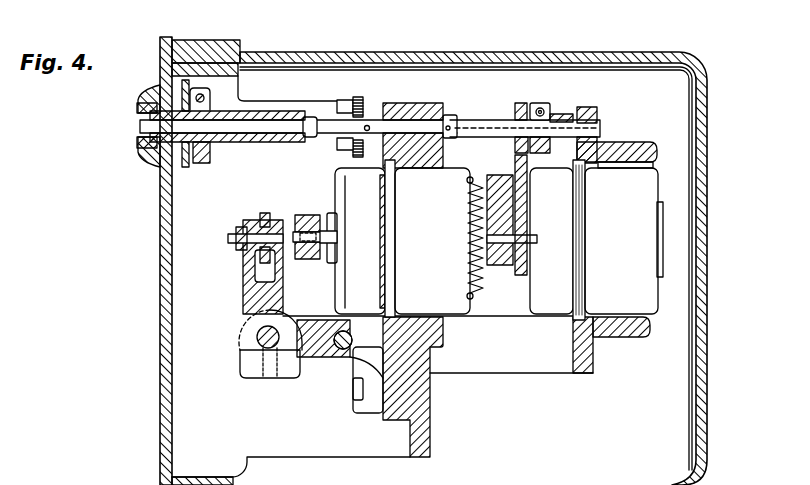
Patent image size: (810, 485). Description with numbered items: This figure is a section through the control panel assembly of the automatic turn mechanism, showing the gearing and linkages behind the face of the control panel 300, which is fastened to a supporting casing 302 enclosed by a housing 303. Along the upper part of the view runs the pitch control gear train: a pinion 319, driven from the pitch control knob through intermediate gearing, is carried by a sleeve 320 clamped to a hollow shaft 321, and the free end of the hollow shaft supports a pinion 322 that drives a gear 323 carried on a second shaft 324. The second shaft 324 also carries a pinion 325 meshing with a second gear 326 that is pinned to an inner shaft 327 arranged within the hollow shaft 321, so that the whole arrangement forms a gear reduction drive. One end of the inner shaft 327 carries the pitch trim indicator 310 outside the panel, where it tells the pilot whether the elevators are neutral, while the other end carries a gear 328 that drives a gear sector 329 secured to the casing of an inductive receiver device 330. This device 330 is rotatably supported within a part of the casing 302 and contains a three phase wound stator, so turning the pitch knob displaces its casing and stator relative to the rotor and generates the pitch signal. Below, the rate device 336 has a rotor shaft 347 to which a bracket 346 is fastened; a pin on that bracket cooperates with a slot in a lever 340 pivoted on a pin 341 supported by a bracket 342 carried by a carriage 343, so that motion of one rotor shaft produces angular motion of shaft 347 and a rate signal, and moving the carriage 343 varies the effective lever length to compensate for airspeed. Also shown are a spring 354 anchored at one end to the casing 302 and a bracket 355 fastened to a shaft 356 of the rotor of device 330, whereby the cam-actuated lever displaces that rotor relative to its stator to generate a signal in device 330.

The control panel 300 is at (161, 313).
The supporting casing 302 is at (604, 150).
The housing 303 is at (593, 58).
The pitch trim indicator 310 is at (143, 96).
The pinion 319 is at (186, 168).
The sleeve 320 is at (208, 152).
The hollow shaft 321 is at (258, 142).
The pinion 322 is at (342, 108).
The gear 323 is at (342, 142).
The second shaft 324 is at (427, 126).
The pinion 325 is at (377, 158).
The second gear 326 is at (358, 97).
The shaft 327 is at (483, 126).
The gear 328 is at (521, 103).
The gear sector 329 is at (518, 166).
The inductive receiver device 330 is at (640, 216).
The device 336 is at (368, 238).
The lever 340 is at (265, 218).
The pin 341 is at (236, 246).
The bracket 342 is at (246, 291).
The carriage 343 is at (287, 368).
The bracket 346 is at (310, 259).
The shaft 347 is at (317, 237).
The spring 354 is at (468, 257).
The bracket 355 is at (497, 187).
The shaft 356 is at (527, 239).